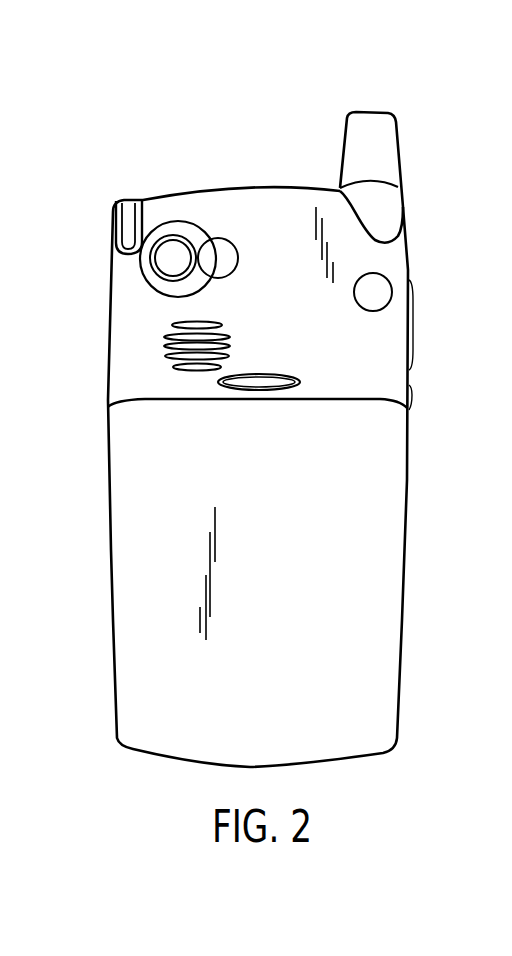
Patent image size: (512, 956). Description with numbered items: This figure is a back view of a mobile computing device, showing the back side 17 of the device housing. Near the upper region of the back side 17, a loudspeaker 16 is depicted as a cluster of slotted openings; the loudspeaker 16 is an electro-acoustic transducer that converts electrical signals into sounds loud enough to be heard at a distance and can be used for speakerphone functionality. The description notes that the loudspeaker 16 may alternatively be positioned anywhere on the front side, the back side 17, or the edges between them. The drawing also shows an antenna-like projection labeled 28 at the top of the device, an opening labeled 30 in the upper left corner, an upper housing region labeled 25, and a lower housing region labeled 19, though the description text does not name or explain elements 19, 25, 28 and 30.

The loudspeaker 16 is at (167, 343).
The back side 17 is at (297, 573).
The lower housing section 19 is at (393, 460).
The housing 25 is at (108, 450).
The antenna 28 is at (397, 140).
The slot 30 is at (133, 198).